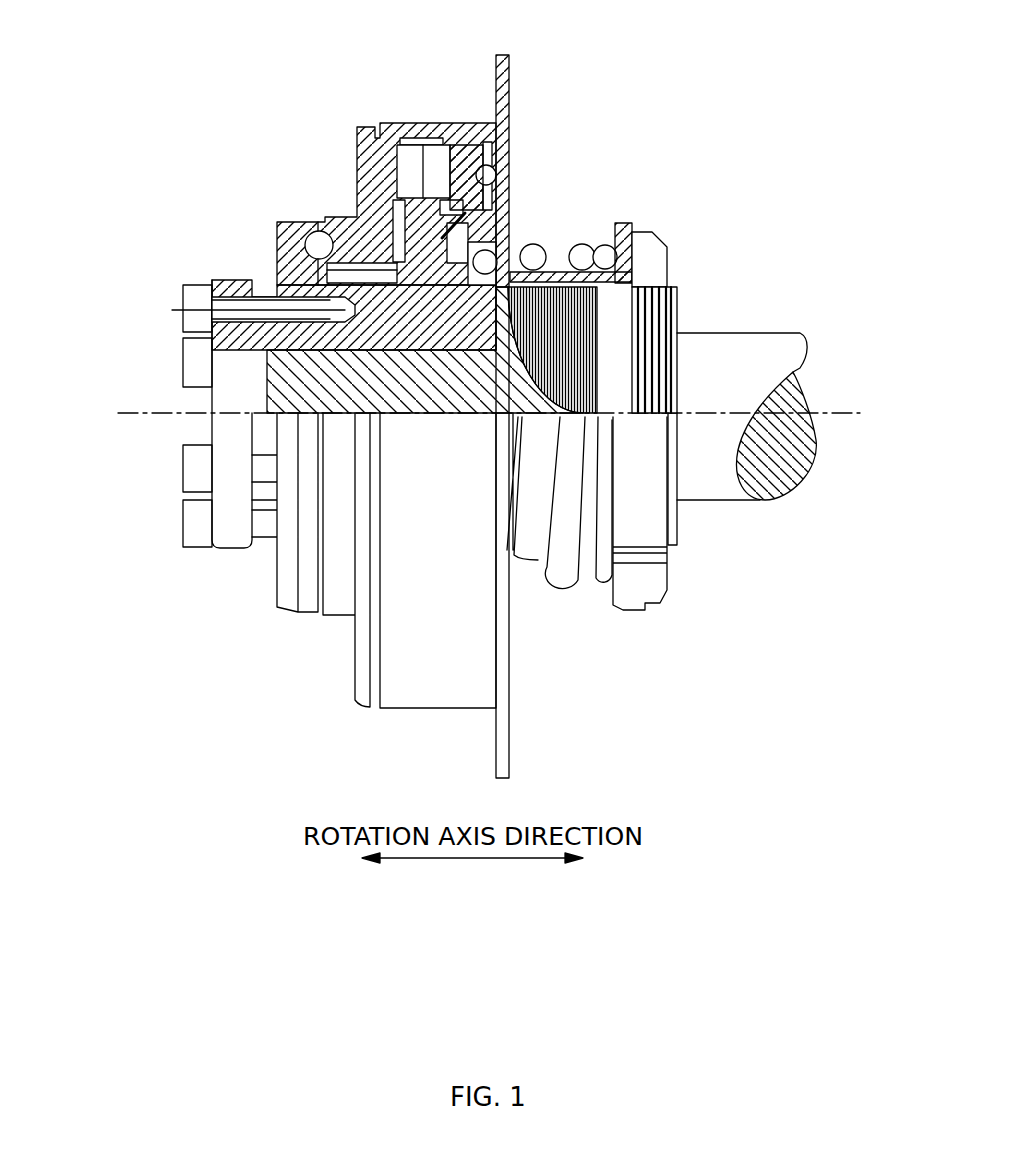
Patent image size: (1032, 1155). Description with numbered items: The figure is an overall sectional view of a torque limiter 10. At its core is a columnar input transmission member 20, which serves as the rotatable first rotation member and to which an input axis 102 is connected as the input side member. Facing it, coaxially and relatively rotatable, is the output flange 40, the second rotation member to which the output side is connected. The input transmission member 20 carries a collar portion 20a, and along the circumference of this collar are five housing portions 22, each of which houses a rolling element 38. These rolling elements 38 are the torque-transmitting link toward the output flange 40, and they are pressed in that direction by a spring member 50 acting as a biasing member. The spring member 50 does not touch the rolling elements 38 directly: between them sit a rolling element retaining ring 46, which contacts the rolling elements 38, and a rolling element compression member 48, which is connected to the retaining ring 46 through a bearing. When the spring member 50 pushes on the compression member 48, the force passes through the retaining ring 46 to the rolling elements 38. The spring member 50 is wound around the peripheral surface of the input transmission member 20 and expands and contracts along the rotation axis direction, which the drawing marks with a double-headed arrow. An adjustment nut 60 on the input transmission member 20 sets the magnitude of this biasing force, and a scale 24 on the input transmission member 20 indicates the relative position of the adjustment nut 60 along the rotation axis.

The torque limiter 10 is at (150, 293).
The input transmission member 20 is at (608, 300).
The collar portion 20a is at (463, 228).
The housing portion 22 is at (490, 148).
The scale 24 is at (678, 290).
The rolling element 38 is at (534, 161).
The output flange 40 is at (357, 172).
The rolling element retaining ring 46 is at (462, 163).
The rolling element compression member 48 is at (500, 56).
The spring member 50 is at (537, 252).
The adjustment nut 60 is at (645, 240).
The input axis 102 is at (730, 335).